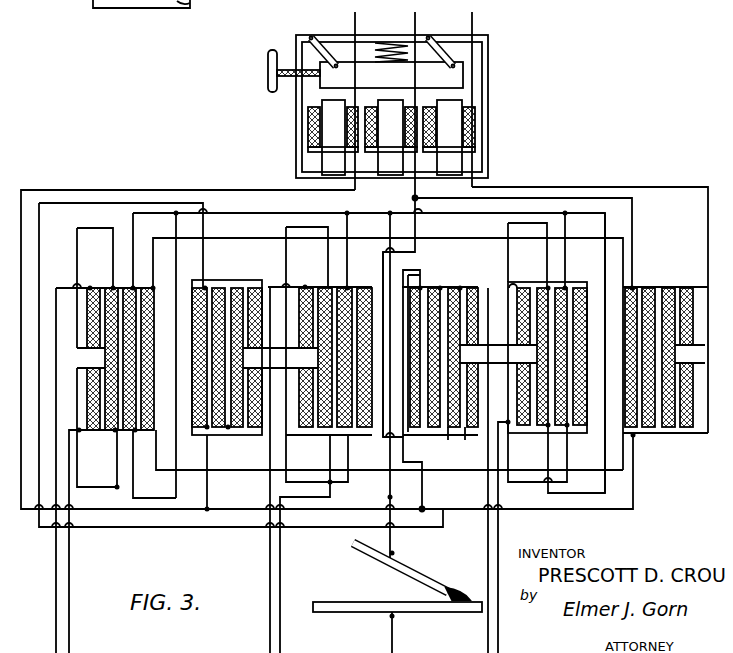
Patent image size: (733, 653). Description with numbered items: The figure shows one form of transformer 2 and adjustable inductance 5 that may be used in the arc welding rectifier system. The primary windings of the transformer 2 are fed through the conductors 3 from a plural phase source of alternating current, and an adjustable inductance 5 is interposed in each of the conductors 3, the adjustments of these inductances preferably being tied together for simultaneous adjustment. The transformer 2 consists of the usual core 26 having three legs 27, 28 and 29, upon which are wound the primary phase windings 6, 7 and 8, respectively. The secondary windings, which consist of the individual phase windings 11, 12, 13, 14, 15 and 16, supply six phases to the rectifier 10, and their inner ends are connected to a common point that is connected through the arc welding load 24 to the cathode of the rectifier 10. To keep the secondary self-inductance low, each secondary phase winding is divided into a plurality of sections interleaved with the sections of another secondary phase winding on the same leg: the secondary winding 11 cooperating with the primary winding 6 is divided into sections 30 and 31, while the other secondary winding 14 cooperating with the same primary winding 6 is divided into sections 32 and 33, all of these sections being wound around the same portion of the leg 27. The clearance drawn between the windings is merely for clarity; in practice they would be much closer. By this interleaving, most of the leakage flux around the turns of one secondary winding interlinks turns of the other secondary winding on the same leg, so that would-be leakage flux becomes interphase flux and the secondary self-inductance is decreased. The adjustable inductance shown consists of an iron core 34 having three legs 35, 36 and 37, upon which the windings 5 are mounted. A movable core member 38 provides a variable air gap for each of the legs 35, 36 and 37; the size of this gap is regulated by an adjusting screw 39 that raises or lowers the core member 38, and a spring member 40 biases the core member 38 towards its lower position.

The transformer 2 is at (615, 235).
The conductors 3 is at (474, 14).
The adjustable inductance 5 is at (431, 105).
The primary phase winding 6 is at (374, 287).
The primary phase winding 7 is at (583, 286).
The primary phase winding 8 is at (148, 288).
The rectifier 10 is at (229, 4).
The secondary winding 11 is at (477, 322).
The secondary phase winding 12 is at (665, 288).
The secondary phase winding 13 is at (222, 288).
The secondary winding 14 is at (452, 472).
The secondary phase winding 15 is at (666, 437).
The secondary phase winding 16 is at (248, 438).
The arc welding load 24 is at (440, 575).
The core 26 is at (233, 245).
The leg 27 is at (469, 326).
The leg 28 is at (612, 298).
The leg 29 is at (163, 425).
The section 30 is at (452, 287).
The section 31 is at (466, 287).
The section 32 is at (462, 466).
The section 33 is at (480, 466).
The iron core 34 is at (392, 176).
The leg 35 is at (332, 150).
The leg 36 is at (392, 149).
The leg 37 is at (448, 149).
The movable core member 38 is at (467, 72).
The adjusting screw 39 is at (272, 92).
The spring member 40 is at (404, 40).